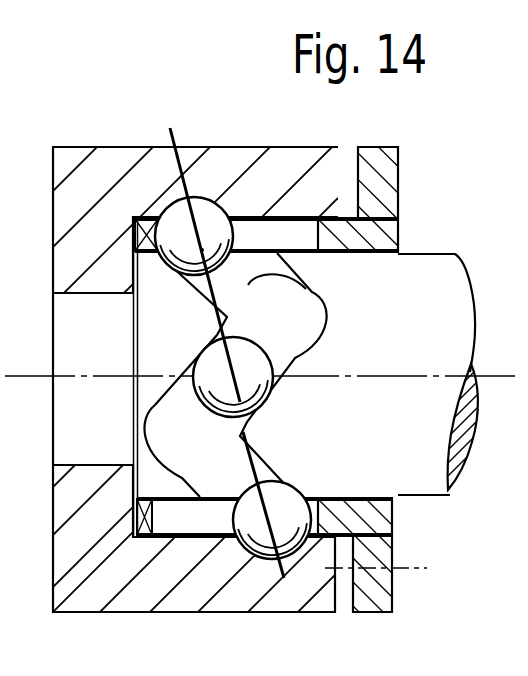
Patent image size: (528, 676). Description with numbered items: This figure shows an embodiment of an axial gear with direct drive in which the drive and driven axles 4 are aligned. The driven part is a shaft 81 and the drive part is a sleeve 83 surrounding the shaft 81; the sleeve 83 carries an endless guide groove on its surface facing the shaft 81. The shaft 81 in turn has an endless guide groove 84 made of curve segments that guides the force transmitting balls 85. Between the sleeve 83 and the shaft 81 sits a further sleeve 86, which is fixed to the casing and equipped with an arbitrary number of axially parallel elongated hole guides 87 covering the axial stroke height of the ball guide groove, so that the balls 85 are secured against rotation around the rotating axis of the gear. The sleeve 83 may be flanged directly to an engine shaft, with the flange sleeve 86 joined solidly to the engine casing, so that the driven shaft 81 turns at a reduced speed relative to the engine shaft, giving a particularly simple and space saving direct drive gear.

The drive and driven axles 4 is at (415, 376).
The shaft 81 is at (395, 410).
The sleeve 83 is at (315, 190).
The endless guide groove 84 is at (317, 288).
The force transmitting balls 85 is at (290, 331).
The sleeve 86 is at (377, 553).
The elongated hole guides 87 is at (200, 515).